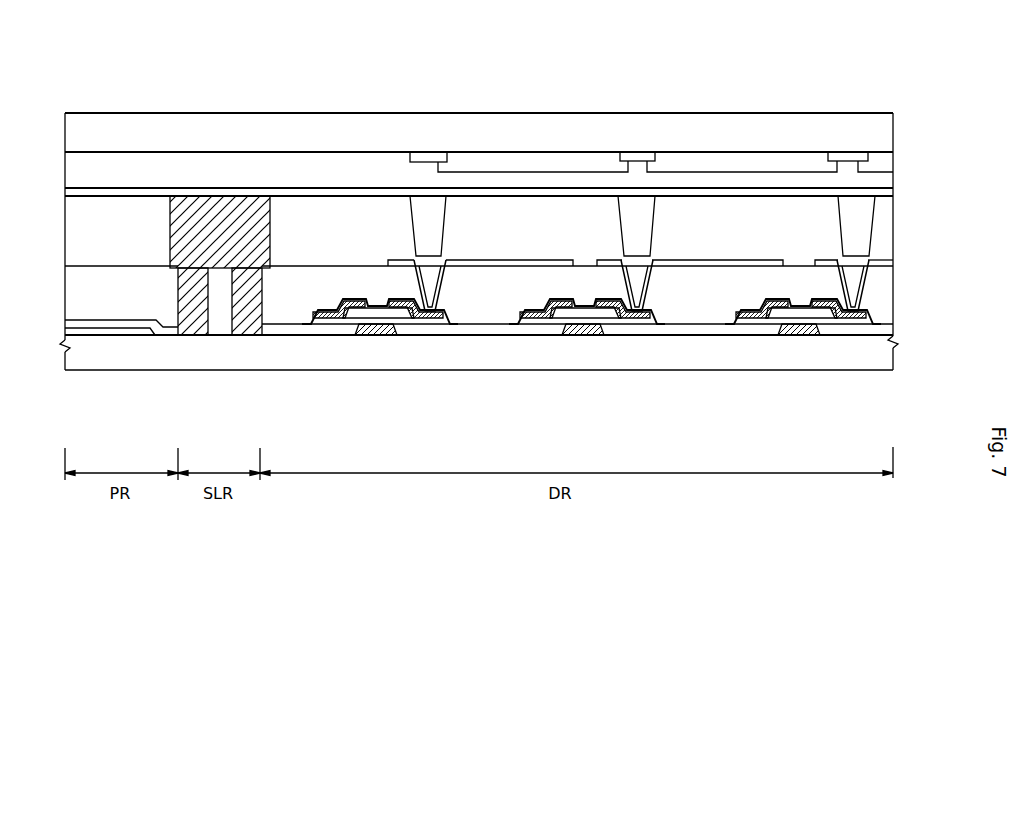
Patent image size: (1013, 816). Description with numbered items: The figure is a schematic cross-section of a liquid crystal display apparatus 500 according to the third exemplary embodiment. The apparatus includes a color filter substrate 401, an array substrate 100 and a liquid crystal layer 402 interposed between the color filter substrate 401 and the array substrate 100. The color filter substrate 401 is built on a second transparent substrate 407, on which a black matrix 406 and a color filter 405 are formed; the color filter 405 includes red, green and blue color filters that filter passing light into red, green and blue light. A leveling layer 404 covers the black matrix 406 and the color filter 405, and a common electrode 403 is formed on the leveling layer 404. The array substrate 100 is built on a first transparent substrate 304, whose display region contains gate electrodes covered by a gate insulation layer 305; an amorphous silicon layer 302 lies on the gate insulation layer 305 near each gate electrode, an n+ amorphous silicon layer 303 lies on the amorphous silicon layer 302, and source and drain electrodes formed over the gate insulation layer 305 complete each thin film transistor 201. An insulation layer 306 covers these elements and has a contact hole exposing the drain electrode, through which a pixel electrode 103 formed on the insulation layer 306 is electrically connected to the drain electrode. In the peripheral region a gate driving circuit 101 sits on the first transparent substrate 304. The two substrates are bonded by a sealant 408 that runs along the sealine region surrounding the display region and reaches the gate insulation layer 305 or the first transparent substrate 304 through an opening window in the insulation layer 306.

The liquid crystal display device 500 is at (878, 70).
The color filter substrate 401 is at (57, 113).
The second transparent substrate 407 is at (893, 130).
The leveling layer 404 is at (893, 177).
The black matrix 406 is at (428, 152).
The color filter 405 is at (600, 160).
The common electrode 403 is at (893, 188).
The liquid crystal layer 402 is at (887, 213).
The sealant 408 is at (178, 240).
The array substrate 100 is at (57, 268).
The first transparent substrate 304 is at (545, 363).
The gate driving circuit 101 is at (122, 336).
The gate insulation layer 305 is at (893, 330).
The insulation layer 306 is at (893, 300).
The pixel electrode 103 is at (893, 262).
The thin film transistor 201 is at (590, 367).
The amorphous silicon layer 302 is at (408, 325).
The n+ amorphous silicon layer 303 is at (423, 320).